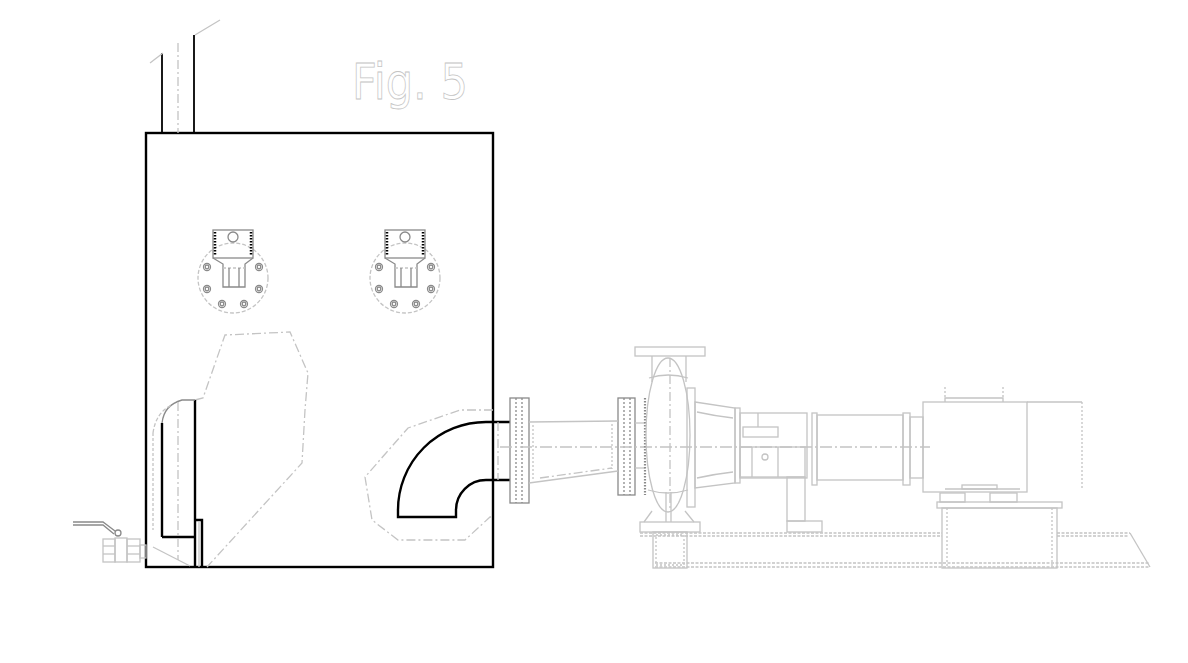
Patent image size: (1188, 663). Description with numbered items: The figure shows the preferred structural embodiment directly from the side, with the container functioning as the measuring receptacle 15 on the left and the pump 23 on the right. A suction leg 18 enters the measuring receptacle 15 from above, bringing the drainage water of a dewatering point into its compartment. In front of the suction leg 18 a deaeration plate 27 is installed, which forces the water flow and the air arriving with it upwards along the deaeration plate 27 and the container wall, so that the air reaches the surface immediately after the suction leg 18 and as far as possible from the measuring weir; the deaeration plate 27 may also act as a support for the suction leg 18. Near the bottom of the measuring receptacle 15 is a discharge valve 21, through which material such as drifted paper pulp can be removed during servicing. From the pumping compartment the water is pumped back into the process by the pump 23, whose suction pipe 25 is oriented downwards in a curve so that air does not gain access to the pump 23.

The measuring receptacle 15 is at (470, 298).
The suction leg 18 is at (195, 472).
The discharge valve 21 is at (122, 525).
The pump 23 is at (678, 408).
The suction pipe 25 is at (458, 468).
The deaeration plate 27 is at (202, 550).